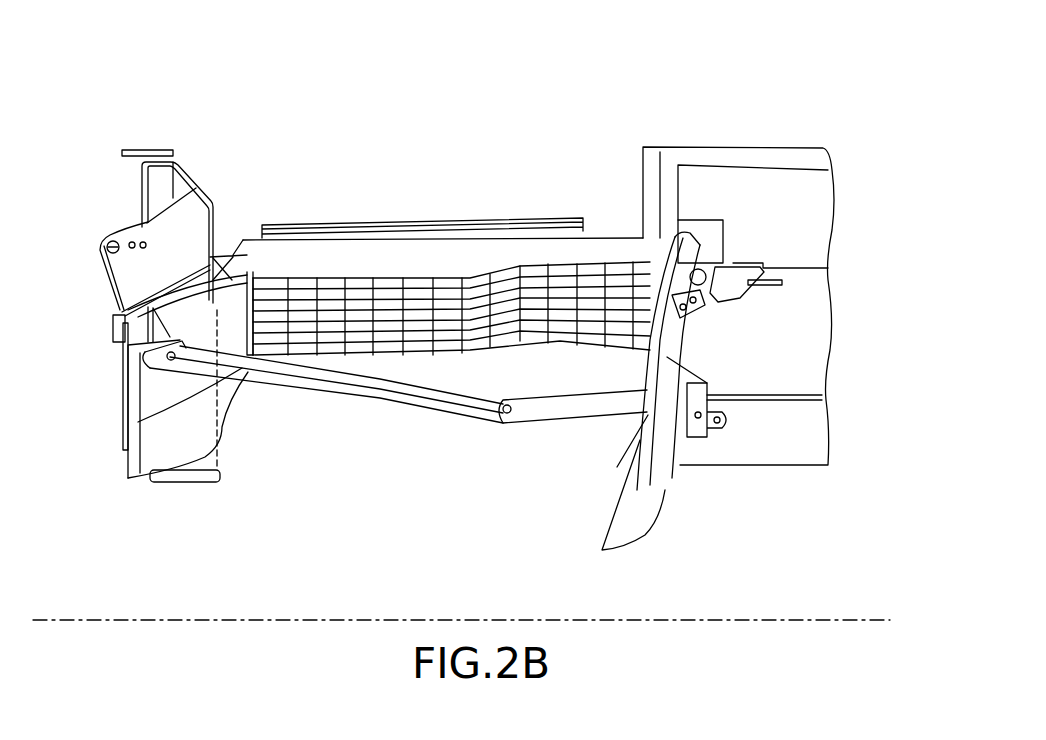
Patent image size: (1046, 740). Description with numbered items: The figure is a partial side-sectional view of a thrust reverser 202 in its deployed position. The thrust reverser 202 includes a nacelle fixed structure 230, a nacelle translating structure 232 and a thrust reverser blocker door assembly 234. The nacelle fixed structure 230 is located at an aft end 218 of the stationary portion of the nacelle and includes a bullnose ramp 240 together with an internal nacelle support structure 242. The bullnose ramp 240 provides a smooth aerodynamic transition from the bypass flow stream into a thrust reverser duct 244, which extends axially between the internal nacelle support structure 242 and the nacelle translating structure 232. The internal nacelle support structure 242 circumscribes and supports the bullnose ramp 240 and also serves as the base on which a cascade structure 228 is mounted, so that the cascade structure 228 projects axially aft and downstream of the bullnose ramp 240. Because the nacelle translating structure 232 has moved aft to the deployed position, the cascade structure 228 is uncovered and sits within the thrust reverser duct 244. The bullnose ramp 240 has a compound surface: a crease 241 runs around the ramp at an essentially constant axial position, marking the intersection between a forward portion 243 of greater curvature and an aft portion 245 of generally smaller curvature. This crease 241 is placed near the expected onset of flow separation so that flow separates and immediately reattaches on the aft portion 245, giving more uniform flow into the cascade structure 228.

The thrust reverser 202 is at (80, 68).
The aft end 218 is at (163, 150).
The cascade structure 228 is at (470, 343).
The nacelle fixed structure 230 is at (140, 182).
The nacelle translating structure 232 is at (738, 148).
The thrust reverser blocker door assembly 234 is at (660, 513).
The bullnose ramp 240 is at (188, 442).
The crease 241 is at (217, 400).
The internal nacelle support structure 242 is at (115, 322).
The forward portion 243 is at (150, 397).
The thrust reverser duct 244 is at (346, 196).
The aft portion 245 is at (232, 315).